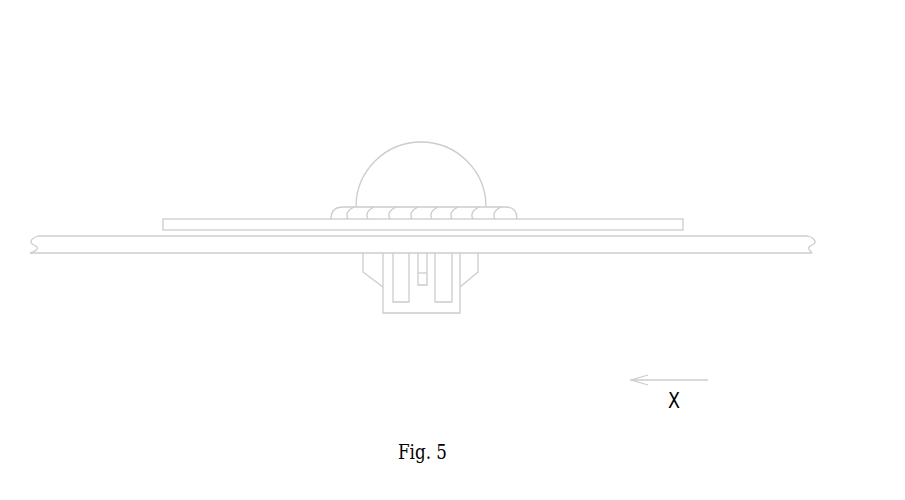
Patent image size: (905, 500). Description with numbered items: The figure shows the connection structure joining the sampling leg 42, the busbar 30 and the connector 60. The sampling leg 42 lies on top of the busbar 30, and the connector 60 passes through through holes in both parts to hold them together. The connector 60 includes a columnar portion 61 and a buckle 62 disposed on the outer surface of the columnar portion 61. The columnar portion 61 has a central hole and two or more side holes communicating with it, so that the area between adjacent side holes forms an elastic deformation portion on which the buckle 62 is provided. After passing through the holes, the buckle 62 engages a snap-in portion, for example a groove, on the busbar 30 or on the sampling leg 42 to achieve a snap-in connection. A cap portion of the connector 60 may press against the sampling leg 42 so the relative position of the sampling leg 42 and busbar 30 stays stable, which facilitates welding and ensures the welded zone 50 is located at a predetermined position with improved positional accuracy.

The busbar 30 is at (700, 249).
The sampling leg 42 is at (600, 226).
The welded zone 50 is at (500, 213).
The connector 60 is at (438, 164).
The columnar portion 61 is at (418, 313).
The buckle 62 is at (372, 268).